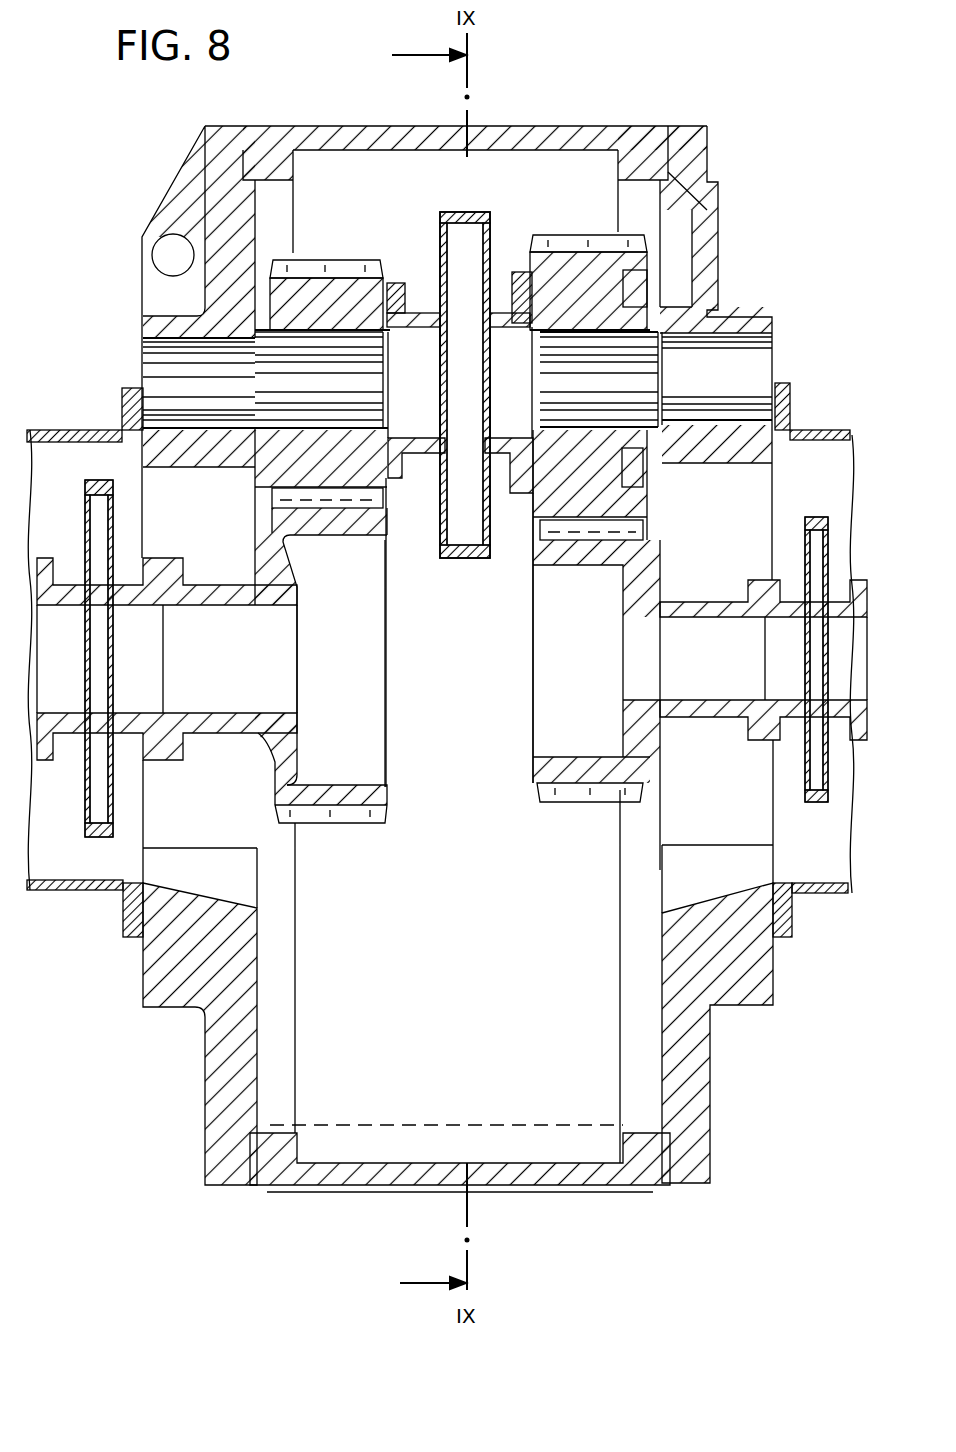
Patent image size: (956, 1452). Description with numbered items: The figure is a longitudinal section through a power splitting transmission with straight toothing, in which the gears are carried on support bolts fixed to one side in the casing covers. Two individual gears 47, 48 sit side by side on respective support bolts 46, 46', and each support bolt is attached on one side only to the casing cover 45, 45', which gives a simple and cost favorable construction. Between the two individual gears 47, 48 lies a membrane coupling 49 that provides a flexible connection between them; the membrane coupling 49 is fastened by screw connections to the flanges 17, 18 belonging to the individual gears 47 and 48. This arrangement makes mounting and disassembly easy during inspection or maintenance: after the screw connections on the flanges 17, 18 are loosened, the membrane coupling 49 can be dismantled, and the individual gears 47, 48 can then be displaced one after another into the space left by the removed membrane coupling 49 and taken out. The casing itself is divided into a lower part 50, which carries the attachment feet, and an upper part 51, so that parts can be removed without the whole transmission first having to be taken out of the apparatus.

The casing cover 45 is at (141, 508).
The casing cover 45' is at (757, 509).
The support bolt 46 is at (241, 385).
The support bolt 46' is at (689, 377).
The individual gear 47 is at (331, 280).
The individual gear 48 is at (569, 256).
The membrane coupling 49 is at (464, 228).
The lower part 50 is at (368, 1178).
The upper part 51 is at (622, 152).
The flange 17 is at (394, 290).
The flange 18 is at (520, 282).